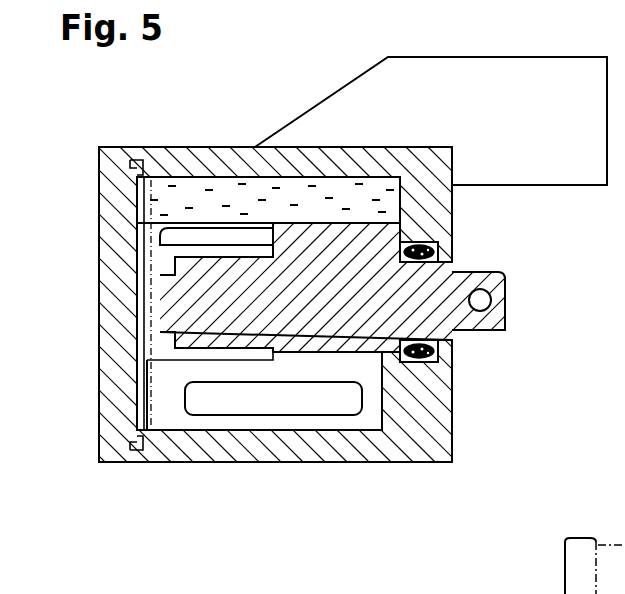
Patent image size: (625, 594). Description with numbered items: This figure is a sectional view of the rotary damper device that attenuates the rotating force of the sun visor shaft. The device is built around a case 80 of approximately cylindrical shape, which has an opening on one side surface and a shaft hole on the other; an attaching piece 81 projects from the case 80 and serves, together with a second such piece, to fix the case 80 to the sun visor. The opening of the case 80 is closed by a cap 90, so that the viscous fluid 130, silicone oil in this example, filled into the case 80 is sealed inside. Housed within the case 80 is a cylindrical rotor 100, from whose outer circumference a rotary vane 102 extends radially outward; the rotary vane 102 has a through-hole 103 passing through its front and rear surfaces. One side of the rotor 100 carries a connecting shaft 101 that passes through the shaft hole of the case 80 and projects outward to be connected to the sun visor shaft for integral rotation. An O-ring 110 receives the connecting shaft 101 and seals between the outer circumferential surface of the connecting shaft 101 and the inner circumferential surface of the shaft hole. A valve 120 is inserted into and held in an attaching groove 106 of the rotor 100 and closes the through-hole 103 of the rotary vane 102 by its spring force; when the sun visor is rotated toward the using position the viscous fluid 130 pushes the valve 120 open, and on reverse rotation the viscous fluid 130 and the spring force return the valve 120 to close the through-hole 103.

The case 80 is at (430, 452).
The attaching piece 81 is at (549, 85).
The cap 90 is at (113, 277).
The rotor 100 is at (335, 245).
The connecting shaft 101 is at (505, 317).
The rotary vane 102 is at (177, 418).
The through-hole 103 is at (290, 406).
The attaching groove 106 is at (619, 492).
The O-ring 110 is at (428, 256).
The valve 120 is at (177, 212).
The viscous fluid 130 is at (207, 192).